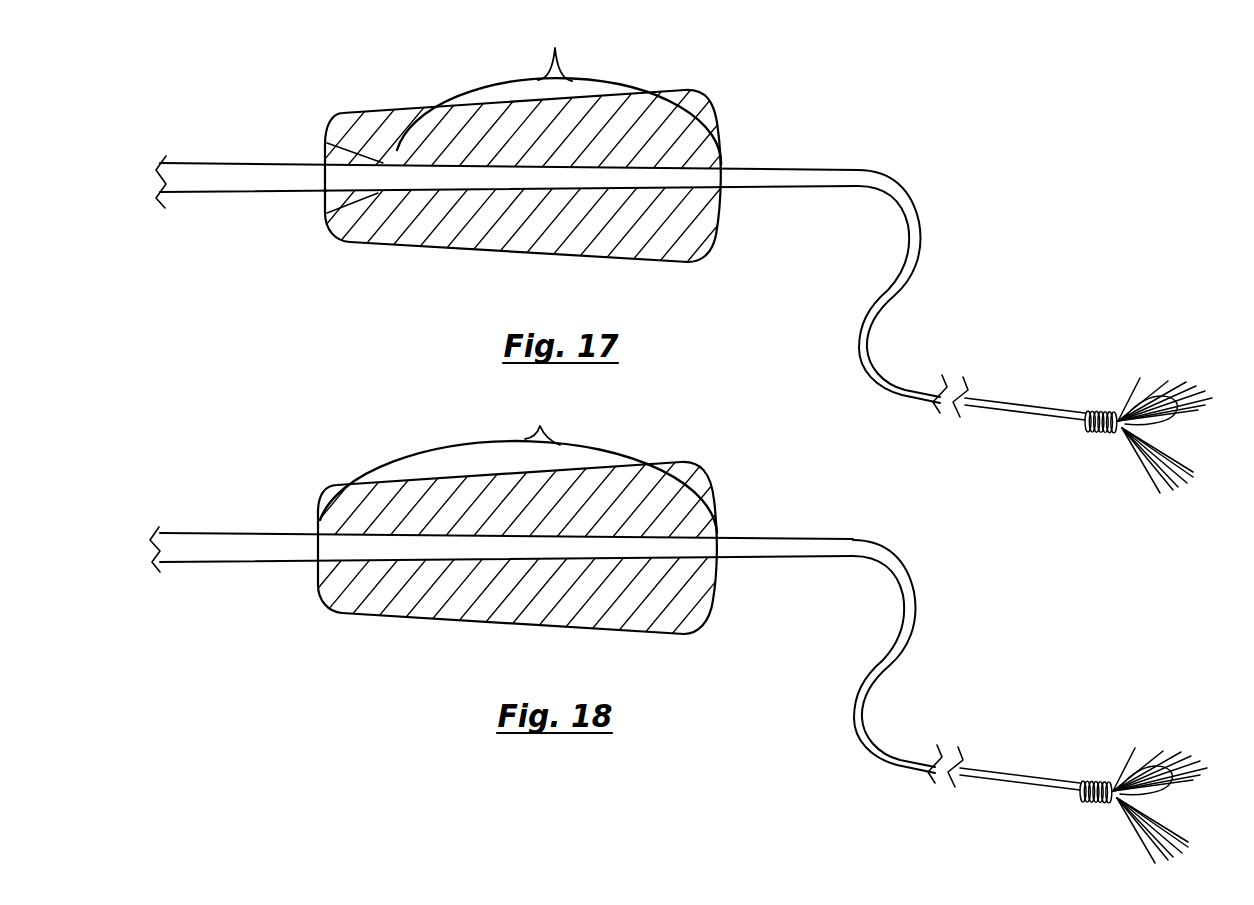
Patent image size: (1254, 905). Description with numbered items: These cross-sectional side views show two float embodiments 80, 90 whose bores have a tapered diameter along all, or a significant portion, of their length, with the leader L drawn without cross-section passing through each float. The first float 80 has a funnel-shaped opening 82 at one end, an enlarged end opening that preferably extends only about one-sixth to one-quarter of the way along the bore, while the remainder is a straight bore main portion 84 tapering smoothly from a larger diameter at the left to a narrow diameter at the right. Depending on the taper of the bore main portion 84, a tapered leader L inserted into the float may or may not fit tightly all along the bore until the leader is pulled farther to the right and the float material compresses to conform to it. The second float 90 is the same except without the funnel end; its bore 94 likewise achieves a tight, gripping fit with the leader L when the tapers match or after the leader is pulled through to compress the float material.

In FIG. 17, the float embodiment 80 is at (446, 87).
In FIG. 17, the funnel-shaped opening 82 is at (338, 201).
In FIG. 17, the bore main portion 84 is at (555, 49).
In FIG. 18, the float embodiment 90 is at (408, 466).
In FIG. 18, the bore 94 is at (542, 418).
In FIG. 17, the fishing line L is at (823, 177).
In FIG. 18, the fishing line L is at (764, 540).